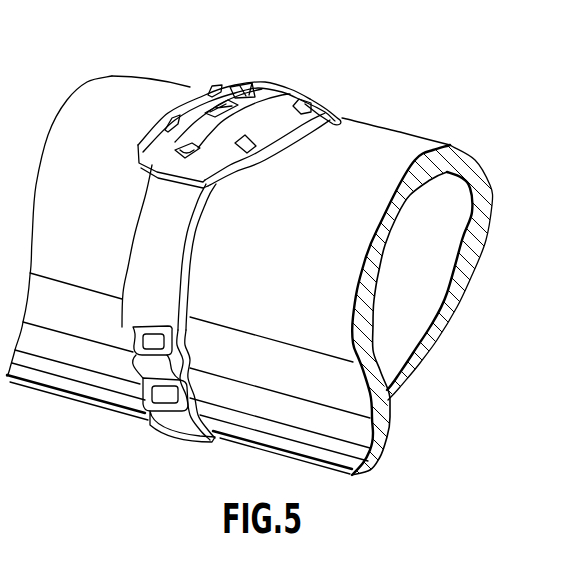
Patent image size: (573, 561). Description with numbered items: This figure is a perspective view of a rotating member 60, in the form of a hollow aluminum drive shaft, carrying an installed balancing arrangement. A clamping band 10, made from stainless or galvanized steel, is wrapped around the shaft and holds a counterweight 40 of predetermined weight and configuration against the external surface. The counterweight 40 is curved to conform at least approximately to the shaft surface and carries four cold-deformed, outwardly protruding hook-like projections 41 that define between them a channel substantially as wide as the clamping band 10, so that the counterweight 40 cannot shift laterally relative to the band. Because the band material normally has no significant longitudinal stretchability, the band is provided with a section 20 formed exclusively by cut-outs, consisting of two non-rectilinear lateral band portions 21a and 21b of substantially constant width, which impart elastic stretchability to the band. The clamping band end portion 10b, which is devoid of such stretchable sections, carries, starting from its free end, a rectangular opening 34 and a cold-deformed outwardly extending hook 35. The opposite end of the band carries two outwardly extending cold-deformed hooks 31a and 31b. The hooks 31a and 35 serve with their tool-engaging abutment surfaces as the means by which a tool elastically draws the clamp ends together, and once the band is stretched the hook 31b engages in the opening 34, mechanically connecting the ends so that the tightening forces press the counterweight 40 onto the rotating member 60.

The clamping band 10 is at (196, 342).
The clamping band end portion 10b is at (284, 88).
The section 20 is at (119, 384).
The non-rectilinear lateral band portion 21a is at (125, 340).
The non-rectilinear lateral band portion 21b is at (188, 392).
The cold-deformed hook 31a is at (210, 104).
The cold-deformed hook 31b is at (140, 157).
The rectangular opening 34 is at (222, 176).
The cold-deformed outwardly extending hook 35 is at (245, 84).
The counterweight 40 is at (294, 138).
The hook-like projection 41 is at (166, 122).
The rotating member 60 is at (420, 145).